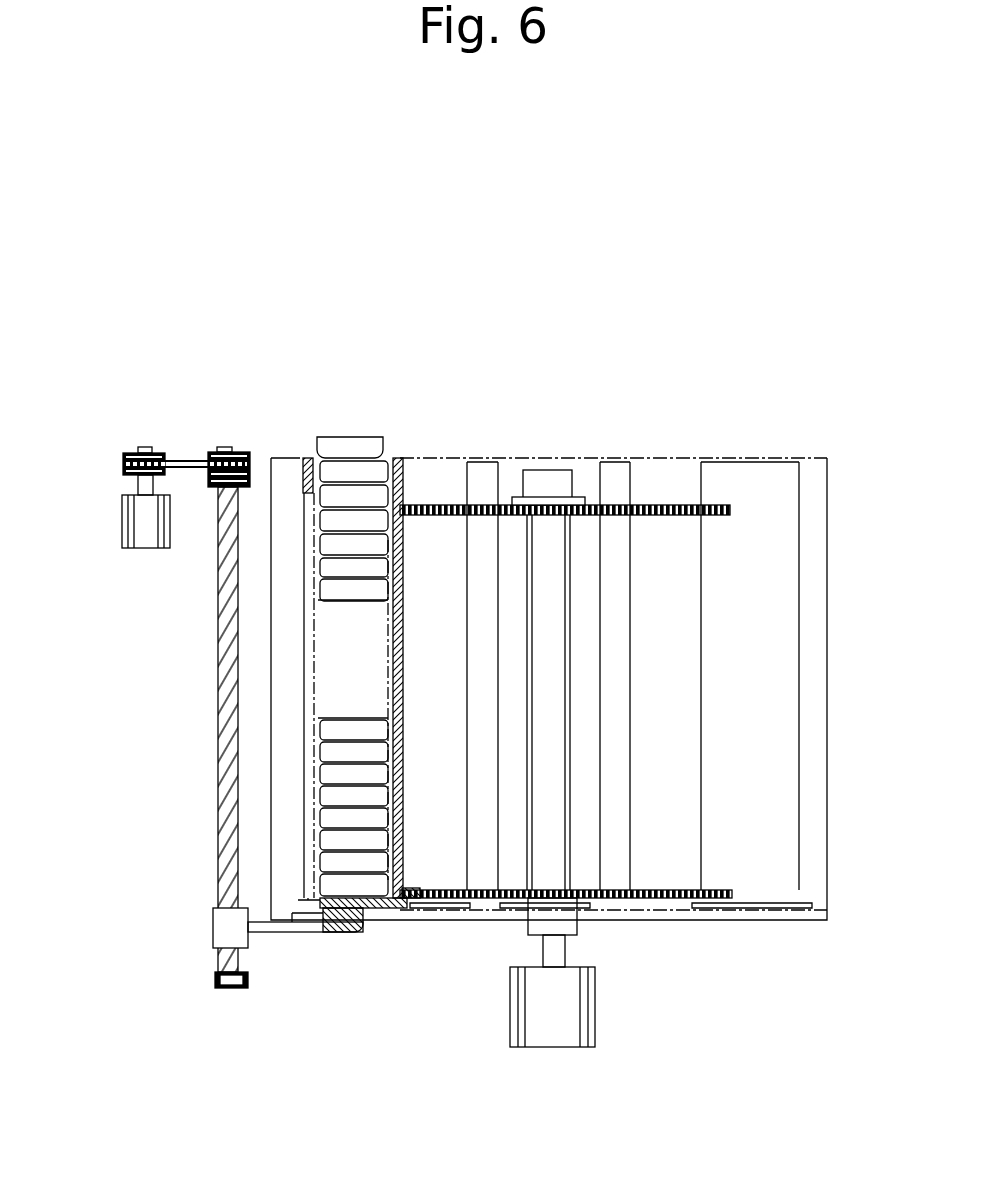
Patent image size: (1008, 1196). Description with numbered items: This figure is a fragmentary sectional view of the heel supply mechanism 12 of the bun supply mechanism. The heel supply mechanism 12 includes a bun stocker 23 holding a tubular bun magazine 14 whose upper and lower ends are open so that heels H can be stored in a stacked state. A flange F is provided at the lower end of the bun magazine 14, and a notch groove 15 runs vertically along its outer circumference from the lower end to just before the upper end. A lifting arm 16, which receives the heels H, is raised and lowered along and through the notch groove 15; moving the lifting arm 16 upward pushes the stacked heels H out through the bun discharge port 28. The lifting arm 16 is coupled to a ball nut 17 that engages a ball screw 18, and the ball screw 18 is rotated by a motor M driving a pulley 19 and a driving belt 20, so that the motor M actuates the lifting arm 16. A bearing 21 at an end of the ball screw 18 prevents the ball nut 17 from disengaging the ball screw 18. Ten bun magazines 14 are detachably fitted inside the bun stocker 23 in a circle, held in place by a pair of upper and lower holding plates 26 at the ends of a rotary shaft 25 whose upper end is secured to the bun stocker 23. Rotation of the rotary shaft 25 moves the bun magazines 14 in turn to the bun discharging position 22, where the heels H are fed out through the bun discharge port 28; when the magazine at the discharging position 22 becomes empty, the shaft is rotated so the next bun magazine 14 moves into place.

The heel supply mechanism 12 is at (552, 388).
The bun magazine 14 is at (305, 458).
The notch groove 15 is at (302, 797).
The lifting arm 16 is at (350, 935).
The ball nut 17 is at (228, 922).
The ball screw 18 is at (226, 770).
The pulley 19 is at (222, 448).
The driving belt 20 is at (150, 480).
The bearing 21 is at (235, 986).
The bun discharging position 22 is at (347, 673).
The bun stocker 23 is at (738, 460).
The rotary shaft 25 is at (553, 700).
The holding plates 26 is at (649, 504).
The bun discharge port 28 is at (396, 452).
The heels H is at (358, 443).
The flange F is at (282, 926).
The motor M is at (572, 1025).